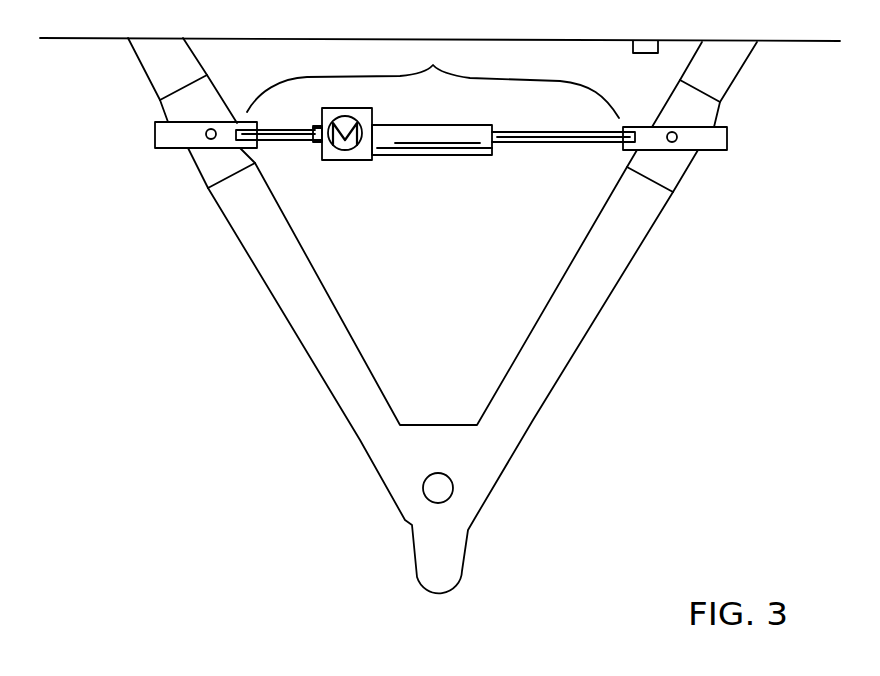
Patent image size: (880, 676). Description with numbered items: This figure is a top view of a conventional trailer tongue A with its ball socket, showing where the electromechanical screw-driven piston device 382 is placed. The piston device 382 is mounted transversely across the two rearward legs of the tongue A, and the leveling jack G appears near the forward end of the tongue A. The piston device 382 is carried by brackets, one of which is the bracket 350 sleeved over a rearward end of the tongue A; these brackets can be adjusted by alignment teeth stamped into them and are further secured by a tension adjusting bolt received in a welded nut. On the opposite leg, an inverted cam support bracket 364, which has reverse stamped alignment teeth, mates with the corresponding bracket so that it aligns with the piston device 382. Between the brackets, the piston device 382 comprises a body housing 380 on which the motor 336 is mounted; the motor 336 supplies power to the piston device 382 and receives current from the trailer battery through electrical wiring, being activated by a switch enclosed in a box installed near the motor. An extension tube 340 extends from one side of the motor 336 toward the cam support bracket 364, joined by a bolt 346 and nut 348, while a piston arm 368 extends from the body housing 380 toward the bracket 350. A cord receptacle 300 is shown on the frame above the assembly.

The cord receptacle 300 is at (653, 53).
The motor 336 is at (355, 152).
The extension tube 340 is at (308, 139).
The bolt 346 is at (318, 147).
The nut 348 is at (313, 126).
The bracket 350 is at (698, 119).
The cam support bracket 364 is at (173, 135).
The piston arm 368 is at (571, 137).
The body housing 380 is at (400, 137).
The piston device 382 is at (433, 80).
The trailer tongue A is at (488, 450).
The leveling jack G is at (438, 488).